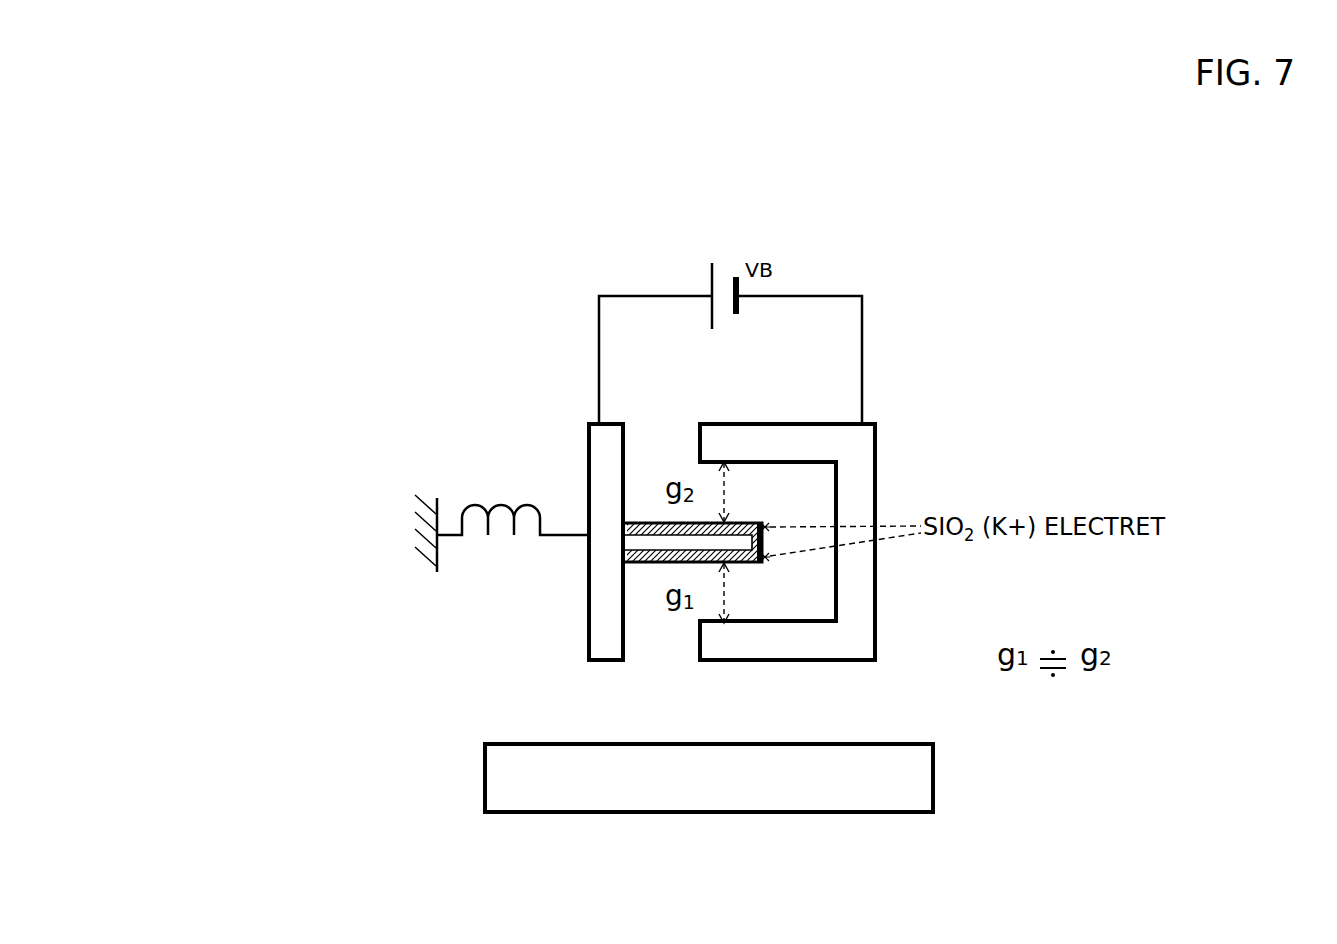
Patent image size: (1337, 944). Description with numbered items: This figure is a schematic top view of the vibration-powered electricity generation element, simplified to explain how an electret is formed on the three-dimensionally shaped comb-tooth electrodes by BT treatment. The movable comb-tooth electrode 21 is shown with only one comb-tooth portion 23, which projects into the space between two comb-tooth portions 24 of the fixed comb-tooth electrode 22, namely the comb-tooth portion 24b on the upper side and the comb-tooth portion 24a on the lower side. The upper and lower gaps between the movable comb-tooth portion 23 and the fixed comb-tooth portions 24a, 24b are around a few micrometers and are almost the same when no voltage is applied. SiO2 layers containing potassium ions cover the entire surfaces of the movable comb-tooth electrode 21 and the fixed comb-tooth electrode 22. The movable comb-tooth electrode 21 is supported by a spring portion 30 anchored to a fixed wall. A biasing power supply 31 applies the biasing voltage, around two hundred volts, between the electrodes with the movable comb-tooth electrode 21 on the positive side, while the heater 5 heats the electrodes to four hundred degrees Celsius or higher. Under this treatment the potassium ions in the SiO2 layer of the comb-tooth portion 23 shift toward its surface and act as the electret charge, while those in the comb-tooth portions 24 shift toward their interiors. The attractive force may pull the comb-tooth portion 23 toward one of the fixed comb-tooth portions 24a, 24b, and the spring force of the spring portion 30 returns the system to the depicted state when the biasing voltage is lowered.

The heater 5 is at (709, 778).
The movable comb-tooth electrode 21 is at (585, 448).
The fixed comb-tooth electrode 22 is at (878, 461).
The comb-tooth portion 23 is at (655, 517).
The comb-tooth portions 24 is at (785, 428).
The comb-tooth portion on the lower side 24a is at (739, 655).
The comb-tooth portion on the upper side 24b is at (732, 427).
The spring portion 30 is at (507, 533).
The biasing power supply 31 is at (722, 270).